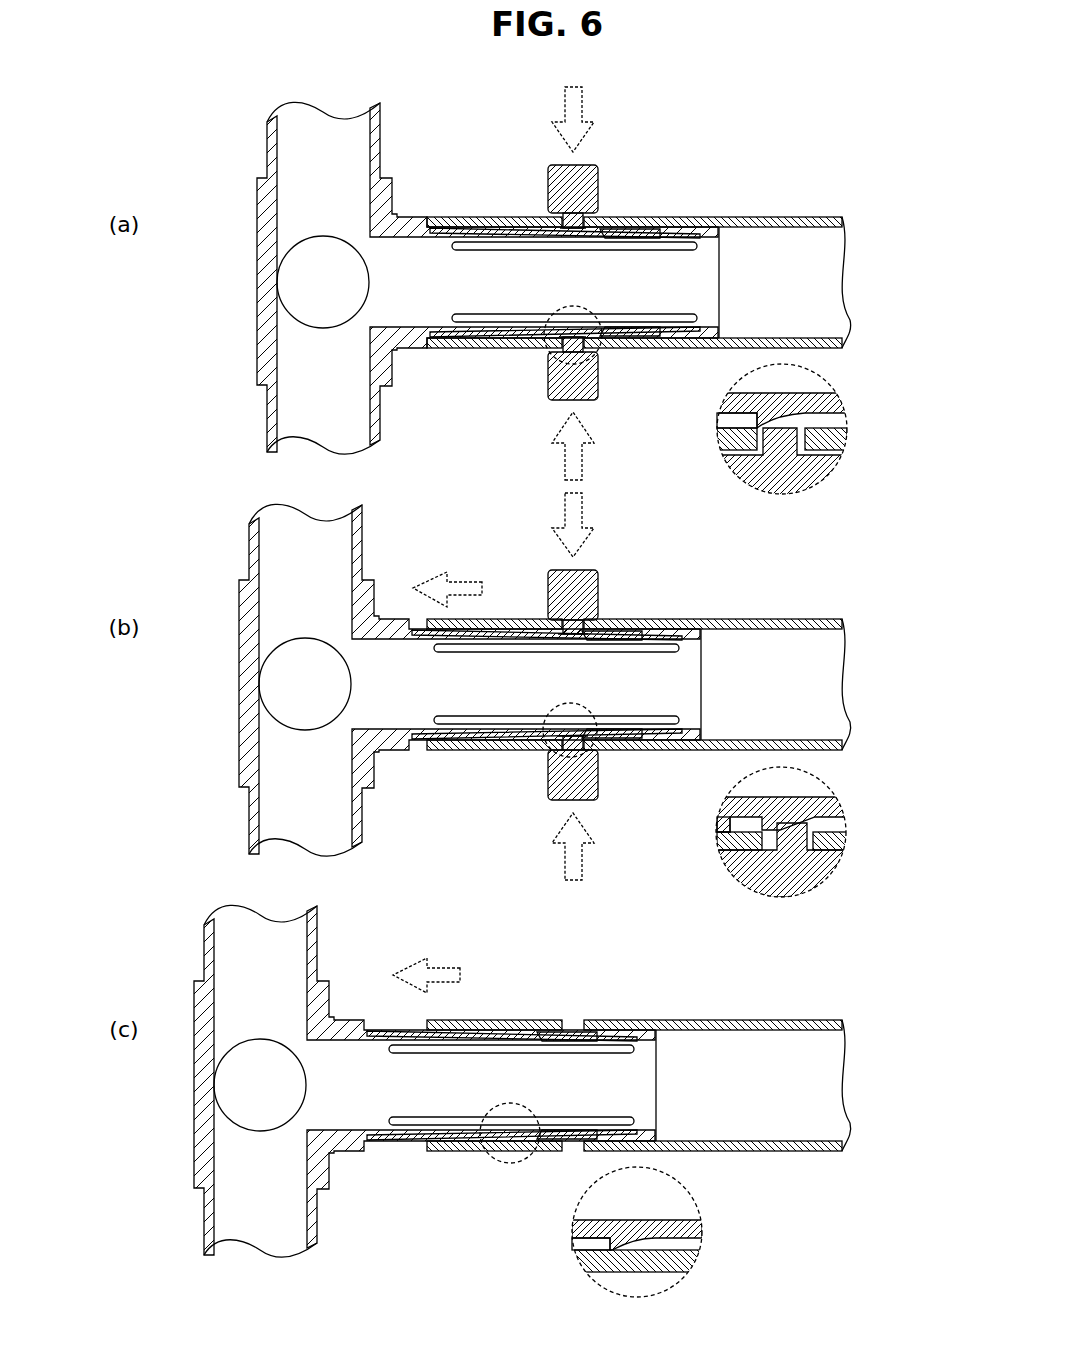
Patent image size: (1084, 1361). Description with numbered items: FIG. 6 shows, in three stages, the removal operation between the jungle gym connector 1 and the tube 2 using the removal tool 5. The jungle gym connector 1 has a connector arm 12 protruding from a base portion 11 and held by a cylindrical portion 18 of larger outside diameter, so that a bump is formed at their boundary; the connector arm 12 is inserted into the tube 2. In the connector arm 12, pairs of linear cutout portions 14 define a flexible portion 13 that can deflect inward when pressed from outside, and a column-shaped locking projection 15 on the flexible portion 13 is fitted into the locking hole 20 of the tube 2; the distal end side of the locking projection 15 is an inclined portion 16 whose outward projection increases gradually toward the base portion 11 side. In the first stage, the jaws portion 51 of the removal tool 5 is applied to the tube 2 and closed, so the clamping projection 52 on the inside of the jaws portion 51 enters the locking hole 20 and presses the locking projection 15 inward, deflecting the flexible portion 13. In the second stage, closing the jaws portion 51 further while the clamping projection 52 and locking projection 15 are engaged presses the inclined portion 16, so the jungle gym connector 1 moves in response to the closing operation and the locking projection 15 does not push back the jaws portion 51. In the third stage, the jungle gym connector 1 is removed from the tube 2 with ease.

The jungle gym connector 1 is at (513, 671).
The tube 2 is at (759, 217).
The removal tool 5 is at (599, 179).
The base portion 11 is at (262, 345).
The connector arm 12 is at (458, 340).
The flexible portion 13 is at (528, 350).
The cutout portions 14 is at (643, 340).
The locking projection 15 is at (718, 428).
The inclined portion 16 is at (842, 435).
The cylindrical portion 18 is at (412, 340).
The locking hole 20 is at (735, 455).
The jaws portion 51 is at (568, 215).
The clamping projection 52 is at (572, 228).